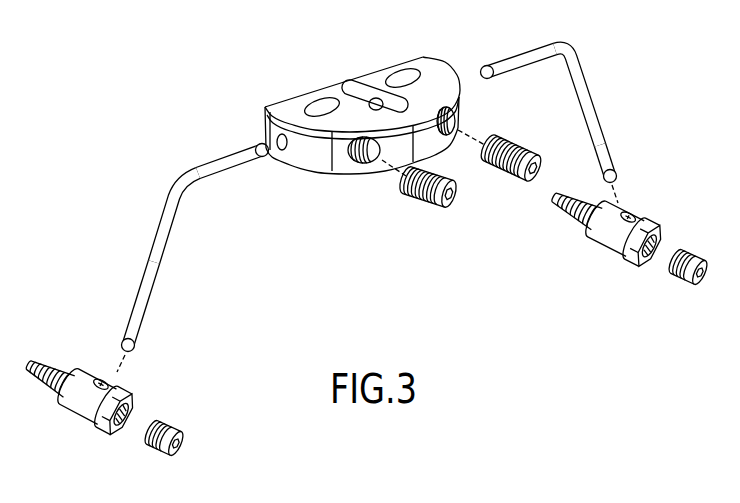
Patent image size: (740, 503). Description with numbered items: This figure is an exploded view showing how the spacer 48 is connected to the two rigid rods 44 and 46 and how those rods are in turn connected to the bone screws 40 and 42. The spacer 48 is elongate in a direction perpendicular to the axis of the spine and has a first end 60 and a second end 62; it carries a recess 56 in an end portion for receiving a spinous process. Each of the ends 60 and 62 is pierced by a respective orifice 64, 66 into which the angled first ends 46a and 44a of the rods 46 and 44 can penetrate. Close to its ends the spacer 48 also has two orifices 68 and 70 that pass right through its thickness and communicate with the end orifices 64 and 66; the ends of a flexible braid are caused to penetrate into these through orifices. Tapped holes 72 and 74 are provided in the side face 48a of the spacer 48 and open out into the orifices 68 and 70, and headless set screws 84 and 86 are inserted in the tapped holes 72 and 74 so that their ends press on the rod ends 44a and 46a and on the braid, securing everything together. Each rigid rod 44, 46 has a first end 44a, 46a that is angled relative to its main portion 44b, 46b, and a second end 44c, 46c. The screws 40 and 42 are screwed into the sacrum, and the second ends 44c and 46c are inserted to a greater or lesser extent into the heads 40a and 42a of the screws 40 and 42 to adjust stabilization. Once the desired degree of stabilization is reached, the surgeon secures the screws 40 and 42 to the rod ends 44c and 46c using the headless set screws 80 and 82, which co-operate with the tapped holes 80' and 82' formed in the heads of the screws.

The screw 40 is at (132, 415).
The head of the screw 40a is at (88, 428).
The headless set screw 80 is at (159, 453).
The tapped hole 80' is at (135, 392).
The screw 42 is at (626, 266).
The head of the screw 42a is at (608, 258).
The headless set screw 82 is at (688, 283).
The tapped hole 82' is at (658, 226).
The rigid rod 44 is at (168, 242).
The first end of the rod 44a is at (217, 163).
The main portion of the rod 44b is at (147, 267).
The second end of the rod 44c is at (125, 347).
The rigid rod 46 is at (573, 108).
The first end of the rod 46a is at (490, 68).
The main portion of the rod 46b is at (593, 95).
The second end of the rod 46c is at (617, 168).
The spacer 48 is at (375, 120).
The side face of the spacer 48a is at (387, 163).
The recess 56 is at (347, 87).
The first end of the spacer 60 is at (438, 72).
The second end of the spacer 62 is at (295, 115).
The orifice 64 is at (373, 103).
The orifice 66 is at (280, 152).
The orifice 68 is at (322, 105).
The orifice 70 is at (402, 77).
The tapped hole 72 is at (360, 168).
The tapped hole 74 is at (455, 119).
The headless set screw 84 is at (447, 210).
The headless set screw 86 is at (520, 188).